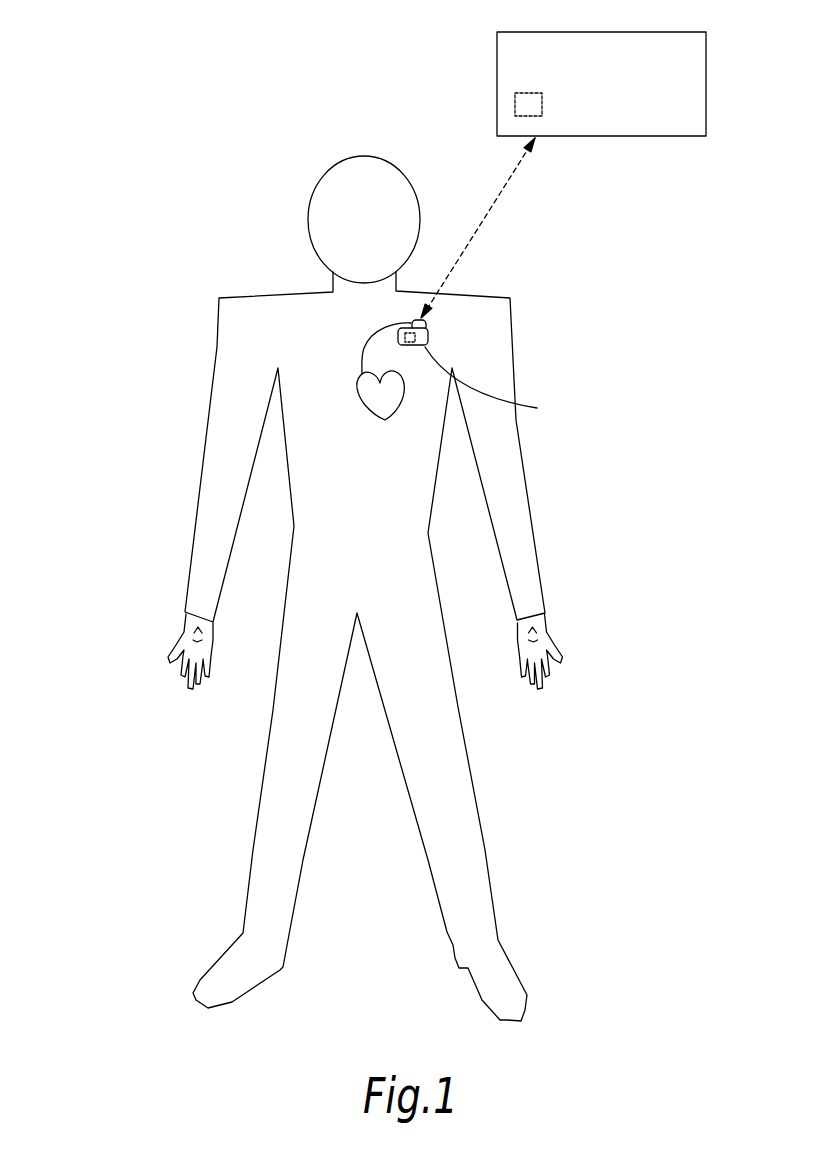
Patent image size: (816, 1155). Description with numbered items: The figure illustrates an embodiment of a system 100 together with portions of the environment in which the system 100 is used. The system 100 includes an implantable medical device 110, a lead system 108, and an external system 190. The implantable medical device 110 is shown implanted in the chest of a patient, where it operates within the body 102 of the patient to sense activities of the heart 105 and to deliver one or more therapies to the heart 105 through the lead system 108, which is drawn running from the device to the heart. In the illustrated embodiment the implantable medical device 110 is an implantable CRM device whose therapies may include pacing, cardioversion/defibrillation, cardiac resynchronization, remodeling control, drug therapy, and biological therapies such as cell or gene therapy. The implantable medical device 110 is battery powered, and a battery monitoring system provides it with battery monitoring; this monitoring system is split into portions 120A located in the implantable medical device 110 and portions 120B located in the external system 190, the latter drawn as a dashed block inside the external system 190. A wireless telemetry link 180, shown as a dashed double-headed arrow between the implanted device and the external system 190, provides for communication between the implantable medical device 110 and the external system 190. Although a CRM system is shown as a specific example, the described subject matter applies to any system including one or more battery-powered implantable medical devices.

The system 100 is at (137, 93).
The body 102 is at (292, 527).
The heart 105 is at (362, 411).
The lead system 108 is at (360, 344).
The implantable medical device 110 is at (430, 336).
The portions of battery monitoring system in implantable medical device 120A is at (504, 389).
The portions of battery monitoring system in external system 120B is at (514, 101).
The wireless telemetry link 180 is at (481, 228).
The external system 190 is at (706, 53).